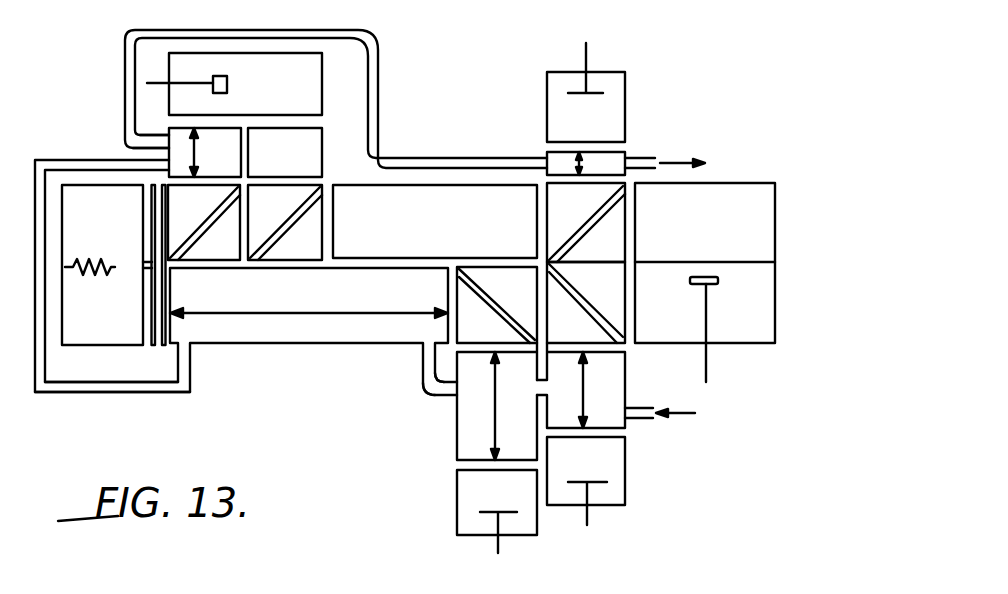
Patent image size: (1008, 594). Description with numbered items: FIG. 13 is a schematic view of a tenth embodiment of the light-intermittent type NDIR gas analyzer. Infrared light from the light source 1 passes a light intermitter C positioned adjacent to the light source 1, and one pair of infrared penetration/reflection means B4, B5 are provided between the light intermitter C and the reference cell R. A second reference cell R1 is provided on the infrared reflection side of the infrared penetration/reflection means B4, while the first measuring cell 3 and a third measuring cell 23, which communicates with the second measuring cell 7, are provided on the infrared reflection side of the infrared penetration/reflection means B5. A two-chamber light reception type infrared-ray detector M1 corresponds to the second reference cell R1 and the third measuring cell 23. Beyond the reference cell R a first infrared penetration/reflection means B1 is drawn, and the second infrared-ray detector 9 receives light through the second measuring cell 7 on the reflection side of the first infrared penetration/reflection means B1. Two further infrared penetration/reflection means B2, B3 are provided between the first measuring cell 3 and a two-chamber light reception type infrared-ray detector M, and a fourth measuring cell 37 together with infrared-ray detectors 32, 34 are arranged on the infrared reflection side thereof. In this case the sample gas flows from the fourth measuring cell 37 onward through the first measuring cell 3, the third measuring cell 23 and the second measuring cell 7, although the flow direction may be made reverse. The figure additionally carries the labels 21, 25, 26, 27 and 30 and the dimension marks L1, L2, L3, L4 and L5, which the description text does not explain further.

The light source 1 is at (100, 348).
The first measuring cell 3 is at (340, 346).
The second measuring cell 7 is at (628, 150).
The second infrared-ray detector 9 is at (626, 82).
The casing 21 is at (90, 393).
The third measuring cell 23 is at (128, 148).
The tube 25 is at (379, 92).
The bend 26 is at (422, 380).
The chamber 27 is at (455, 432).
The inlet 30 is at (675, 418).
The infrared-ray detector 32 is at (627, 473).
The infrared-ray detector 34 is at (455, 503).
The fourth measuring cell 37 is at (627, 373).
The two-chamber light reception type infrared-ray detector M is at (750, 183).
The two-chamber light reception type infrared-ray detector M1 is at (322, 84).
The light intermitter C is at (157, 355).
The reference cell R is at (444, 226).
The second reference cell R1 is at (300, 162).
The first infrared penetration/reflection means B1 is at (563, 240).
The second infrared penetration/reflection means B2 is at (612, 318).
The infrared penetration/reflection means B3 is at (465, 283).
The infrared penetration/reflection means B4 is at (274, 243).
The infrared penetration/reflection means B5 is at (192, 243).
The distance L1 is at (309, 325).
The distance L2 is at (586, 164).
The distance L3 is at (205, 152).
The distance L4 is at (595, 390).
The distance L5 is at (507, 406).